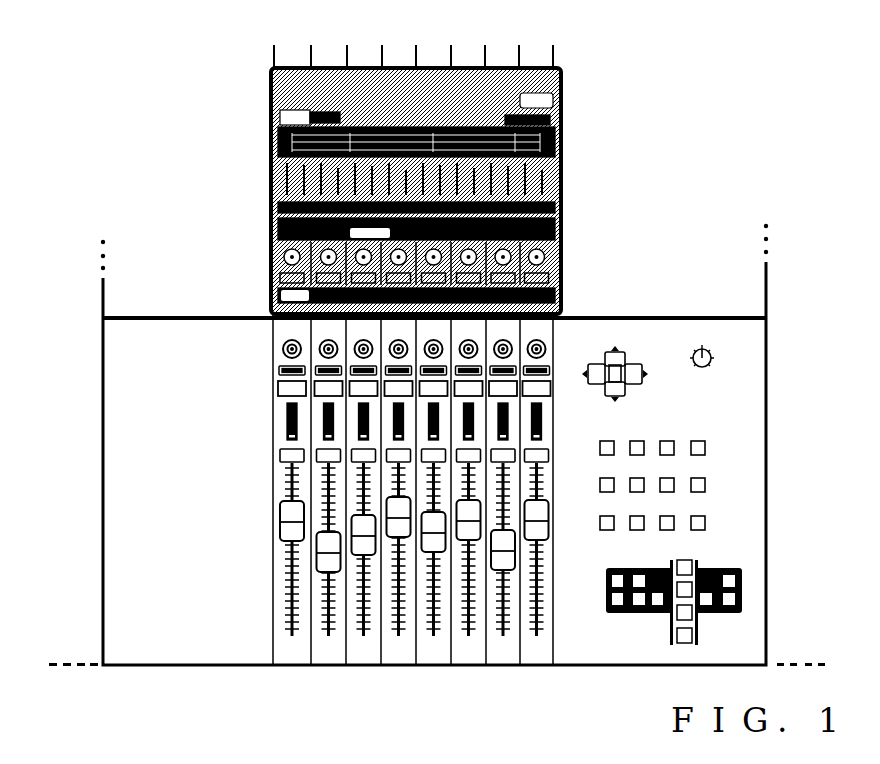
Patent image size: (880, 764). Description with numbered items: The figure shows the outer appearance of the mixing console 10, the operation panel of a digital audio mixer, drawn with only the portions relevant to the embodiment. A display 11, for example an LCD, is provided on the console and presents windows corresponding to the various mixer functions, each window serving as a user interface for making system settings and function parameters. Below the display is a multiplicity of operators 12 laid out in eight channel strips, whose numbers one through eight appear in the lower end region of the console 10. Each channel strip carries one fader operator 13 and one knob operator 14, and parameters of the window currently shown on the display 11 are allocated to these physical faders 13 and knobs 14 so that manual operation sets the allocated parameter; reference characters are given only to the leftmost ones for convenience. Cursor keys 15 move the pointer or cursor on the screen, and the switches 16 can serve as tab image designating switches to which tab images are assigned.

The mixing console 10 is at (170, 92).
The display 11 is at (562, 128).
The operators 12 is at (224, 464).
The fader operator 13 is at (284, 530).
The knob operator 14 is at (283, 349).
The cursor keys 15 is at (639, 394).
The switch 16 is at (281, 383).